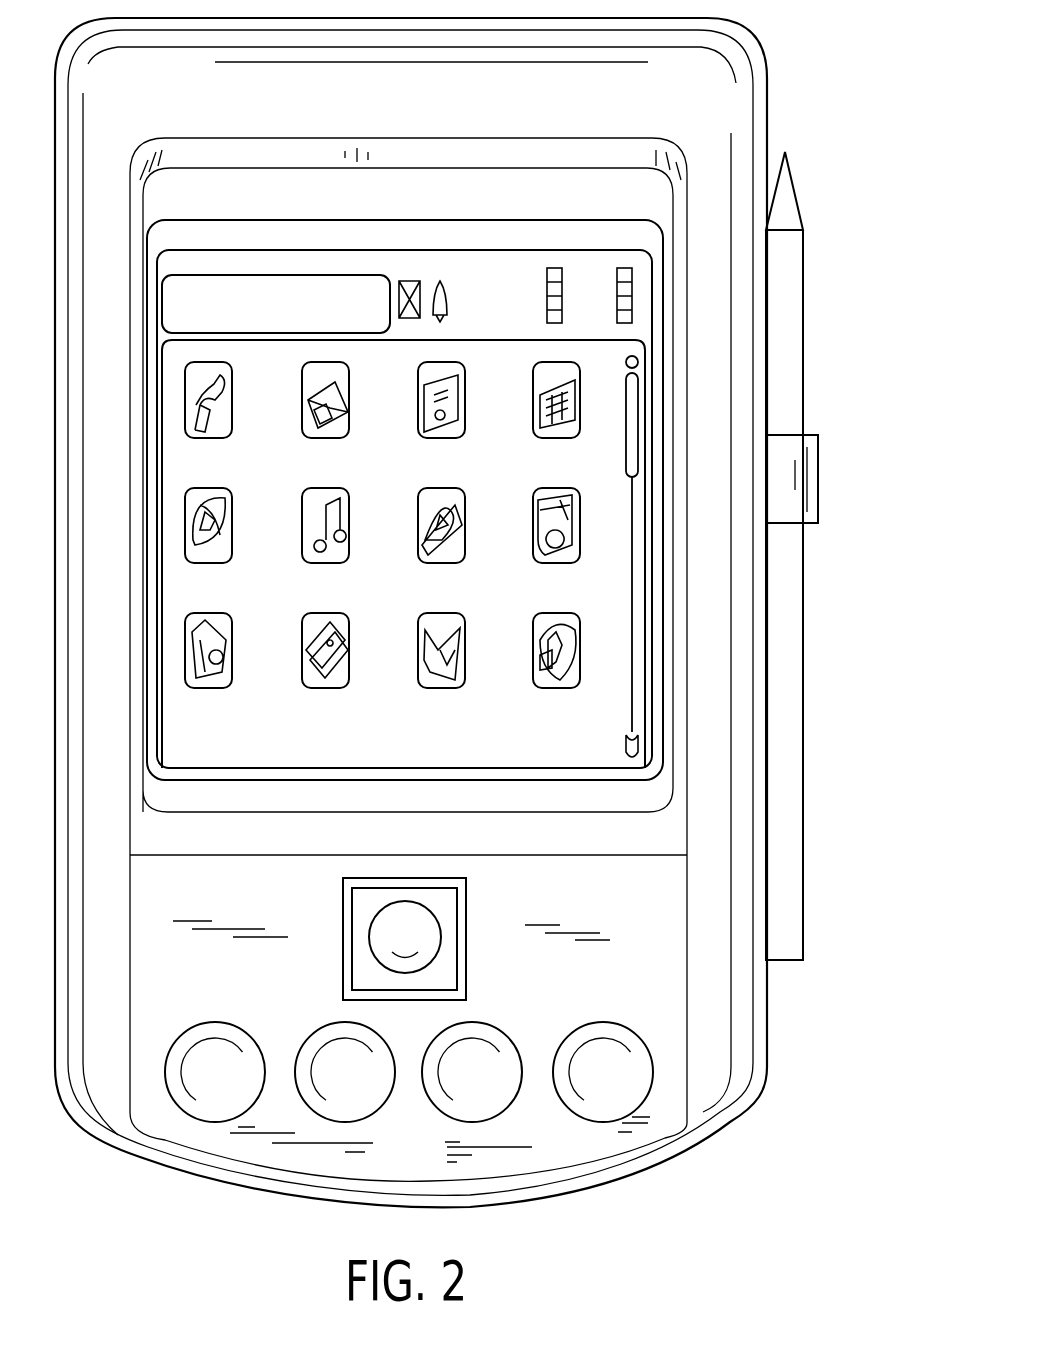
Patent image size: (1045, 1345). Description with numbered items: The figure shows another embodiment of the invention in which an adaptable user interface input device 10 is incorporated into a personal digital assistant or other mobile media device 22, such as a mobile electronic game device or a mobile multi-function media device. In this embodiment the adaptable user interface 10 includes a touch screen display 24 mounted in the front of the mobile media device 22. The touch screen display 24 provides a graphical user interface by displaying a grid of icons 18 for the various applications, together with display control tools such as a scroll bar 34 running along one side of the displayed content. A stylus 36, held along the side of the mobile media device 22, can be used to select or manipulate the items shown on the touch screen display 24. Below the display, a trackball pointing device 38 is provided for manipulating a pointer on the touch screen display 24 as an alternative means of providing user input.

The mobile media device 22 is at (845, 104).
The adaptable user interface input device 10 is at (441, 552).
The touch screen display 24 is at (385, 757).
The scroll bars 34 is at (633, 433).
The icons 18 is at (568, 625).
The stylus 36 is at (786, 825).
The trackball pointing device 38 is at (380, 943).